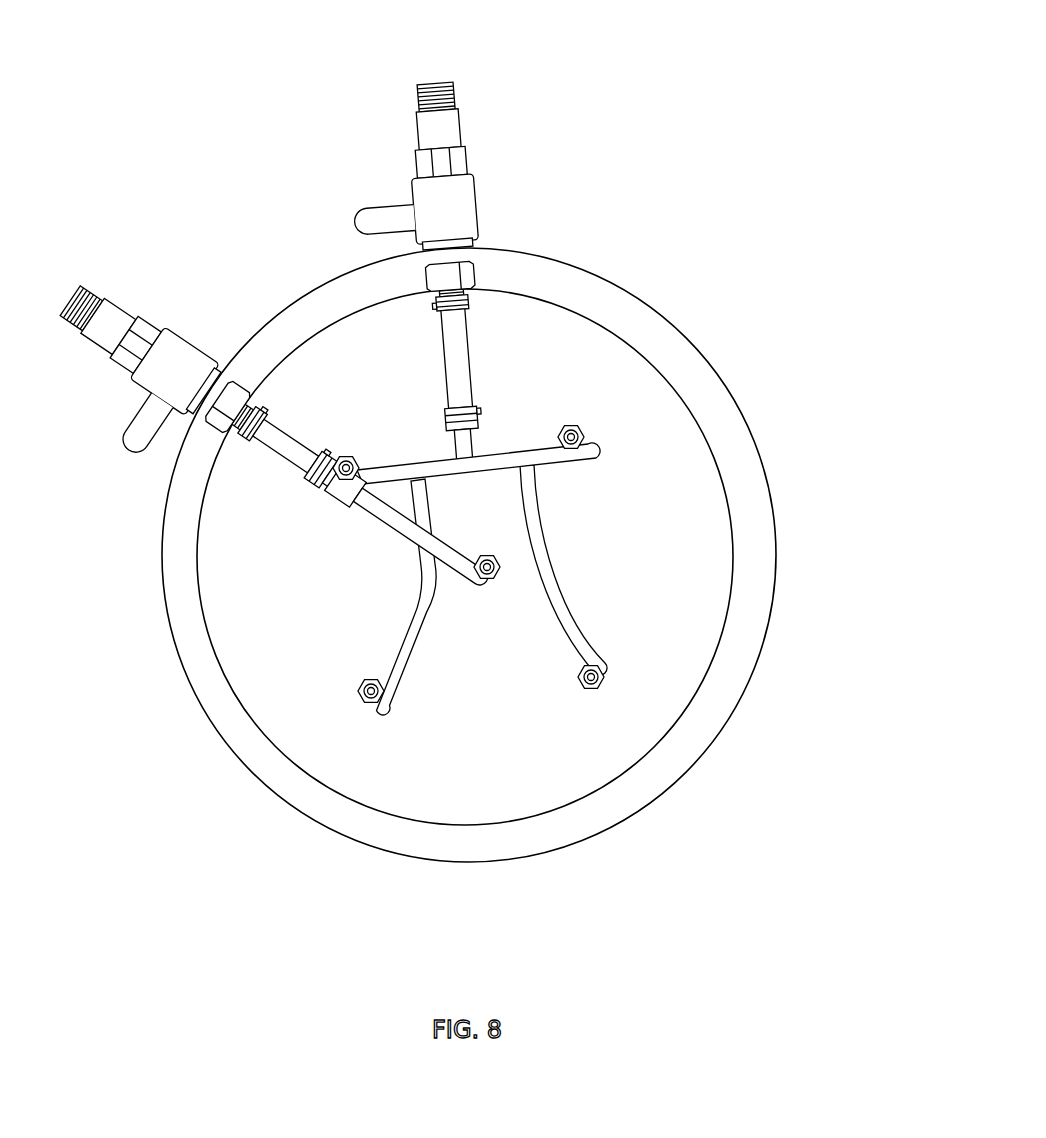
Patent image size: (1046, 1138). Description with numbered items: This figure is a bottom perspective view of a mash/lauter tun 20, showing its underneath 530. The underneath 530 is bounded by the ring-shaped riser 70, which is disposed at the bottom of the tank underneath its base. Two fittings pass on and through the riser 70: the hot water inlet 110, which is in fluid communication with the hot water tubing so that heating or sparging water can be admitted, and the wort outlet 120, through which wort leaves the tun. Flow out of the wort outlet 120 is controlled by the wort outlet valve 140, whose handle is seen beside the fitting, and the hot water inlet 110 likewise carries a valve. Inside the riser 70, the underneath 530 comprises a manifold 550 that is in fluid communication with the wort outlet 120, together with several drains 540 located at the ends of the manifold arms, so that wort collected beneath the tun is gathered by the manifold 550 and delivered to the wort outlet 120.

The mash/lauter tun 20 is at (679, 73).
The riser 70 is at (590, 290).
The underneath 530 is at (605, 360).
The manifold 550 is at (540, 547).
The drain 540 is at (350, 462).
The wort outlet 120 is at (442, 128).
The hot water inlet 110 is at (107, 318).
The wort outlet valve 140 is at (372, 216).